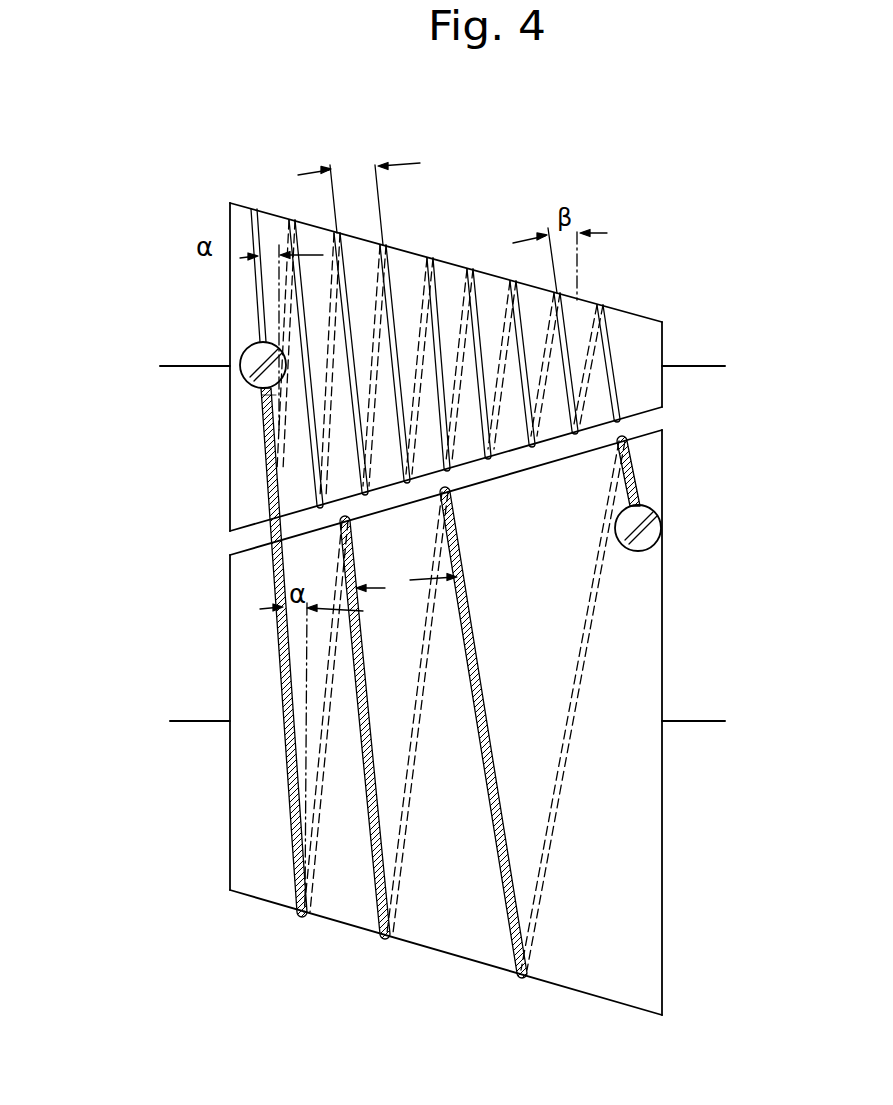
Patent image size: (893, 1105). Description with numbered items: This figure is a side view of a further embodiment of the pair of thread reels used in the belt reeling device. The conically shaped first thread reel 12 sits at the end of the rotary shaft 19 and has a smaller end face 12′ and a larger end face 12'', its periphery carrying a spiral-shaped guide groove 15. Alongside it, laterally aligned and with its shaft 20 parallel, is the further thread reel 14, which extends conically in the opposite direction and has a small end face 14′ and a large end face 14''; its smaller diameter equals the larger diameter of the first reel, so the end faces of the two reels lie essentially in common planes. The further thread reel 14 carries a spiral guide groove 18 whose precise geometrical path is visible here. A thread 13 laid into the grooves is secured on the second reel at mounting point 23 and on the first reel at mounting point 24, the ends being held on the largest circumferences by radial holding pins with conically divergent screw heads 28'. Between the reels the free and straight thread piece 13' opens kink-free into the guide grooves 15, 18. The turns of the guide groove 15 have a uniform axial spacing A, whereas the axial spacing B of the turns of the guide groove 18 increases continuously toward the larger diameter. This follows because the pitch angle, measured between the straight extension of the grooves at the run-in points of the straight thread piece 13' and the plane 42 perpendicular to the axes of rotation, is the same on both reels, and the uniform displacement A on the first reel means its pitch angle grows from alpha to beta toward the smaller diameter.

The thread reel 12 is at (464, 367).
The small end face 12′ is at (667, 345).
The large end face 12'' is at (190, 367).
The thread 13 is at (238, 563).
The straight thread piece 13' is at (219, 477).
The further thread reel 14 is at (489, 722).
The small end face 14′ is at (228, 832).
The large end face 14'' is at (705, 722).
The spiral-shaped guide groove 15 is at (291, 217).
The spiral guide groove 18 is at (293, 906).
The rotary shaft 19 is at (185, 366).
The shaft 20 is at (190, 721).
The mounting point 23 is at (650, 560).
The mounting point 24 is at (238, 380).
The screw head 28' is at (449, 436).
The plane 42 is at (278, 290).
The axial spacing A is at (359, 204).
The axial spacing B is at (406, 587).